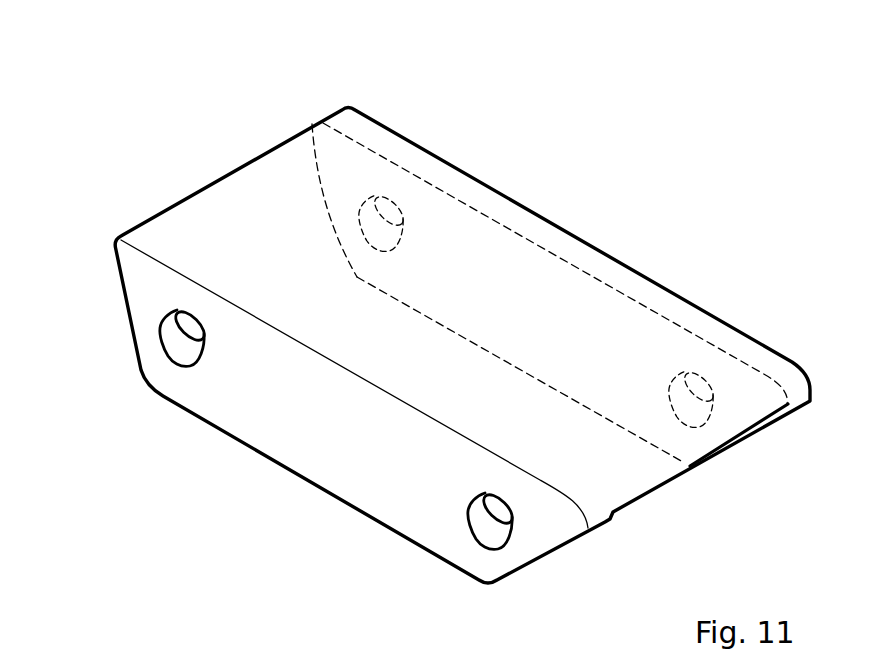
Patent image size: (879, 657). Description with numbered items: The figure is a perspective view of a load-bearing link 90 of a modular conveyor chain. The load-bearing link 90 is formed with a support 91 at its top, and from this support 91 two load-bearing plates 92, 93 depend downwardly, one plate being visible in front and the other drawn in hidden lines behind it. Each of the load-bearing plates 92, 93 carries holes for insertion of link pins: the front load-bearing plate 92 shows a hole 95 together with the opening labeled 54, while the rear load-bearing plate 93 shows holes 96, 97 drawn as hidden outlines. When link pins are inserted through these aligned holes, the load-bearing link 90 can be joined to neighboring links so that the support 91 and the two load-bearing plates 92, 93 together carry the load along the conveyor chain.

The load-bearing link 90 is at (432, 332).
The support 91 is at (431, 179).
The load-bearing plate 92 is at (292, 443).
The load-bearing plate 93 is at (490, 277).
The mounting hole 54 is at (172, 338).
The hole 95 is at (487, 528).
The hole 96 is at (360, 217).
The hole 97 is at (703, 373).